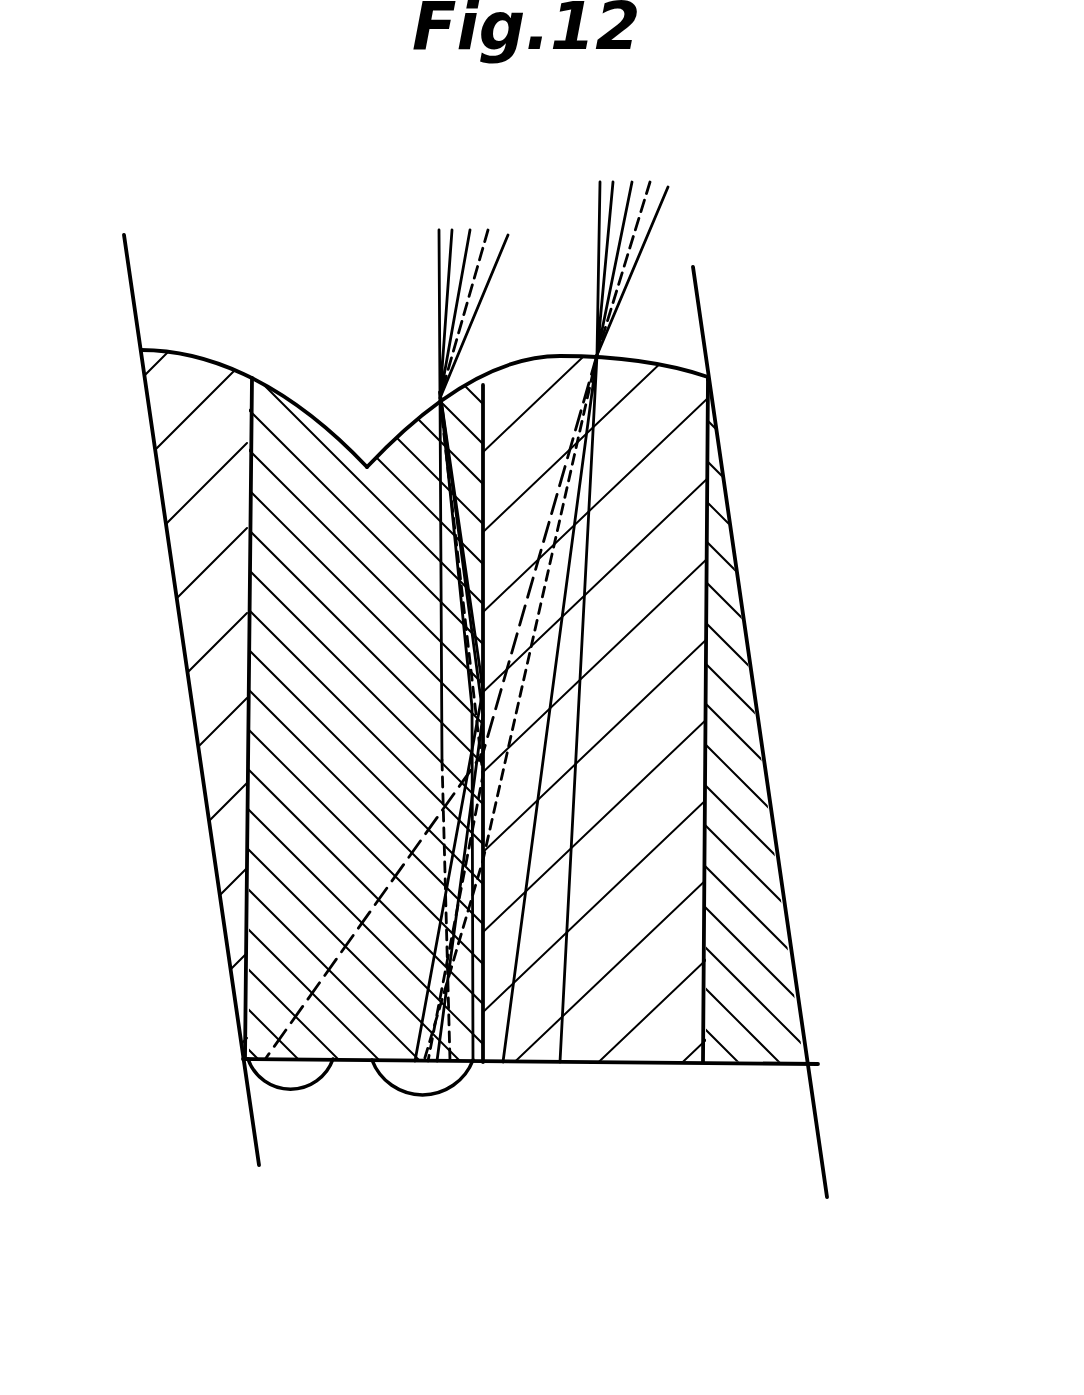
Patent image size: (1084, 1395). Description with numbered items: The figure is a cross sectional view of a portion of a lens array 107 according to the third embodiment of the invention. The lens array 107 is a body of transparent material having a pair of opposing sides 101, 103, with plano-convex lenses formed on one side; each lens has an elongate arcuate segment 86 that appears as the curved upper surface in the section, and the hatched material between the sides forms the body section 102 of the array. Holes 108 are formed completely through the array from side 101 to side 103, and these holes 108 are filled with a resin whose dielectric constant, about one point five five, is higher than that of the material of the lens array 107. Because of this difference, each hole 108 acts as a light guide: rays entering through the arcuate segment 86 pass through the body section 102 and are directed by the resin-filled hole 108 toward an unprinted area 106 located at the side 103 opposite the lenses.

The elongate arcuate segment 86 is at (543, 355).
The side of the body of transparent material 101 is at (223, 353).
The lens body section 102 is at (615, 992).
The side of the body of transparent material 103 is at (718, 1085).
The unprinted area 106 is at (340, 1060).
The lens array 107 is at (752, 337).
The holes 108 is at (305, 520).